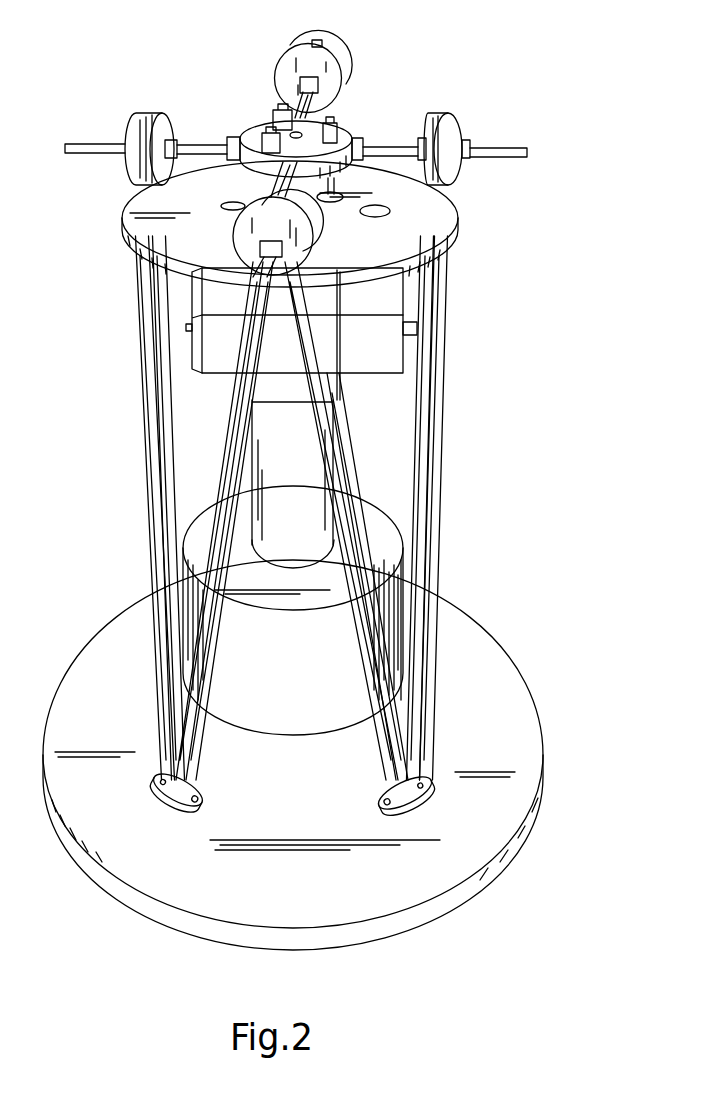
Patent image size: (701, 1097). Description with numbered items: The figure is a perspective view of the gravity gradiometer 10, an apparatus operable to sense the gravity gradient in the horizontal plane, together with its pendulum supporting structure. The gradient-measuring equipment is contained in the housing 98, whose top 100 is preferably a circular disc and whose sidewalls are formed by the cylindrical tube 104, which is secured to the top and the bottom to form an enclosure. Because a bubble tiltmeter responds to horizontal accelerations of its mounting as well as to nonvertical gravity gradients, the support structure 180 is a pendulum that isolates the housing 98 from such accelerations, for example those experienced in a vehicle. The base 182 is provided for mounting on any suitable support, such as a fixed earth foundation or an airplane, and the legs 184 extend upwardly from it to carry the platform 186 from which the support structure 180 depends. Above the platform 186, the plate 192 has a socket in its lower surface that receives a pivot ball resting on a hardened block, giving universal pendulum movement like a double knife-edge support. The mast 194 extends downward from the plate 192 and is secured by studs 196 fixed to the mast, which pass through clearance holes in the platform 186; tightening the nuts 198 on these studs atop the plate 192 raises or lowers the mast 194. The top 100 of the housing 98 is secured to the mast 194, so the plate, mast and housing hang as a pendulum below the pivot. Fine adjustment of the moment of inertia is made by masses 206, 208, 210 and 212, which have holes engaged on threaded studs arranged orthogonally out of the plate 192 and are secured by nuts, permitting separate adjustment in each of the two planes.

The gravity gradiometer 10 is at (464, 245).
The housing 98 is at (393, 536).
The top 100 is at (368, 522).
The cylindrical tube 104 is at (306, 706).
The support structure 180 is at (346, 417).
The base 182 is at (518, 728).
The legs 184 is at (160, 713).
The platform 186 is at (142, 195).
The plate 192 is at (345, 137).
The mast 194 is at (270, 428).
The studs 196 is at (338, 195).
The nuts 198 is at (280, 115).
The mass 206 is at (140, 126).
The mass 208 is at (246, 232).
The mass 210 is at (445, 127).
The mass 212 is at (320, 53).